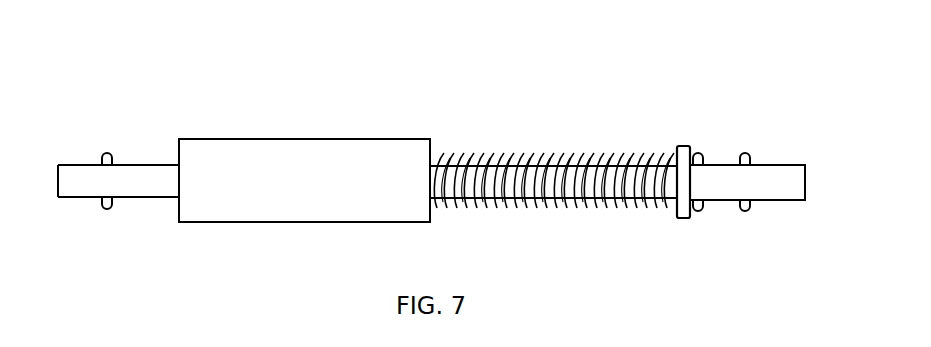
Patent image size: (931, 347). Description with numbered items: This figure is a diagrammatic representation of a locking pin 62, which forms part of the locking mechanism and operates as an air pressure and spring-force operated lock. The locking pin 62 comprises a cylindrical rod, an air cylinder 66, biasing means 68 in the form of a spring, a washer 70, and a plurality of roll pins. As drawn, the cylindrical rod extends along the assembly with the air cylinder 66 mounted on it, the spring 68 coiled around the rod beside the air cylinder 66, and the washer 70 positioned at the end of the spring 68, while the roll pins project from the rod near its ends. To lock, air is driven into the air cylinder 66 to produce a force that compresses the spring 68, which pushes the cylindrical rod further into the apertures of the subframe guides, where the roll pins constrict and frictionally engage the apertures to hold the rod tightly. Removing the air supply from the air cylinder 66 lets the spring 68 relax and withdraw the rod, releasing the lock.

The locking pin 62 is at (697, 48).
The air cylinder 66 is at (304, 180).
The biasing means 68 is at (570, 160).
The washer 70 is at (684, 146).